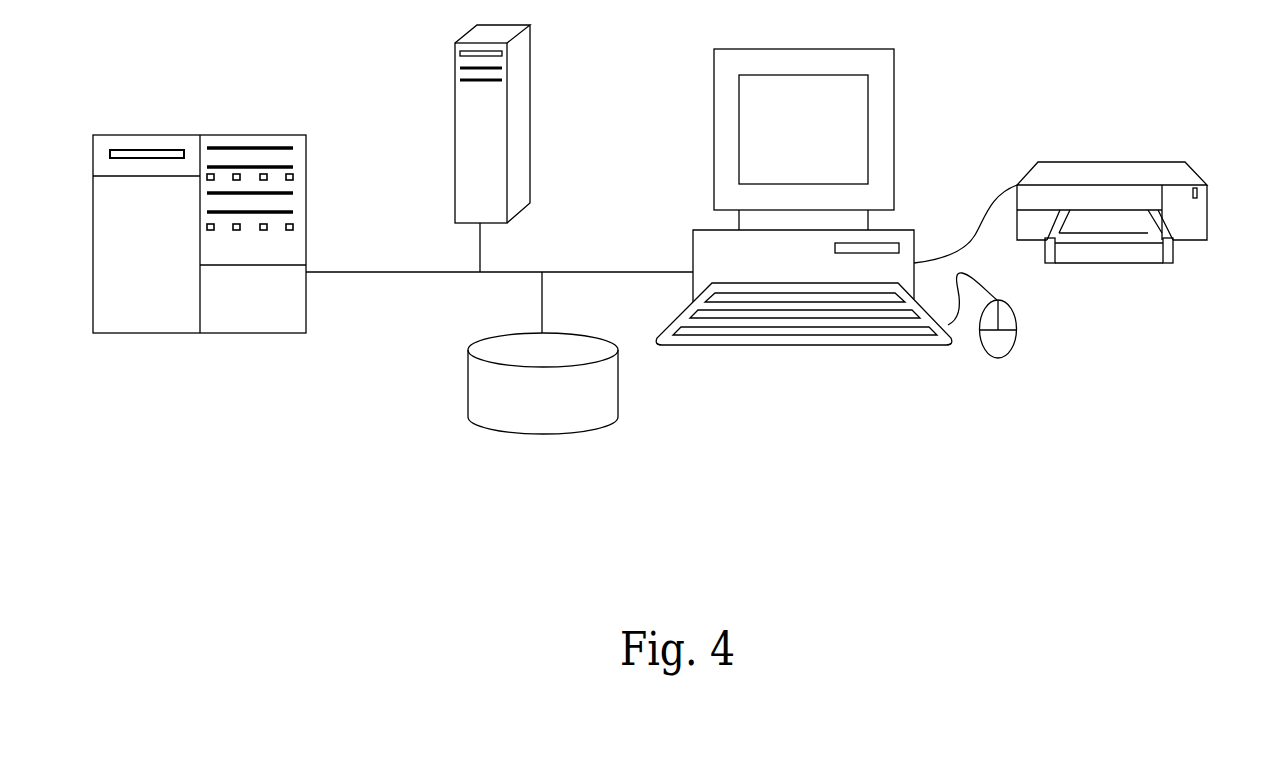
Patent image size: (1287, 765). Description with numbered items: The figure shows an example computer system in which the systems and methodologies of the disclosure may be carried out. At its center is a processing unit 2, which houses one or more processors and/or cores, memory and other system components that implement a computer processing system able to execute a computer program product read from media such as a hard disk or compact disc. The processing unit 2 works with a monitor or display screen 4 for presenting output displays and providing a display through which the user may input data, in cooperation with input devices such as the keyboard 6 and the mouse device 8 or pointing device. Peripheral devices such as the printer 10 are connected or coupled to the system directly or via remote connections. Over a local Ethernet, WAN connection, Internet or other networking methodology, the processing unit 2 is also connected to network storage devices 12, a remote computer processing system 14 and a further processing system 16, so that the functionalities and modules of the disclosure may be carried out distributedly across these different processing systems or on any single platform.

The processing unit 2 is at (698, 255).
The display screen 4 is at (895, 127).
The keyboard 6 is at (860, 345).
The mouse device 8 is at (1017, 345).
The printer 10 is at (1110, 163).
The network storage devices 12 is at (560, 433).
The remote computer processing system 14 is at (532, 112).
The processing system 16 is at (243, 134).